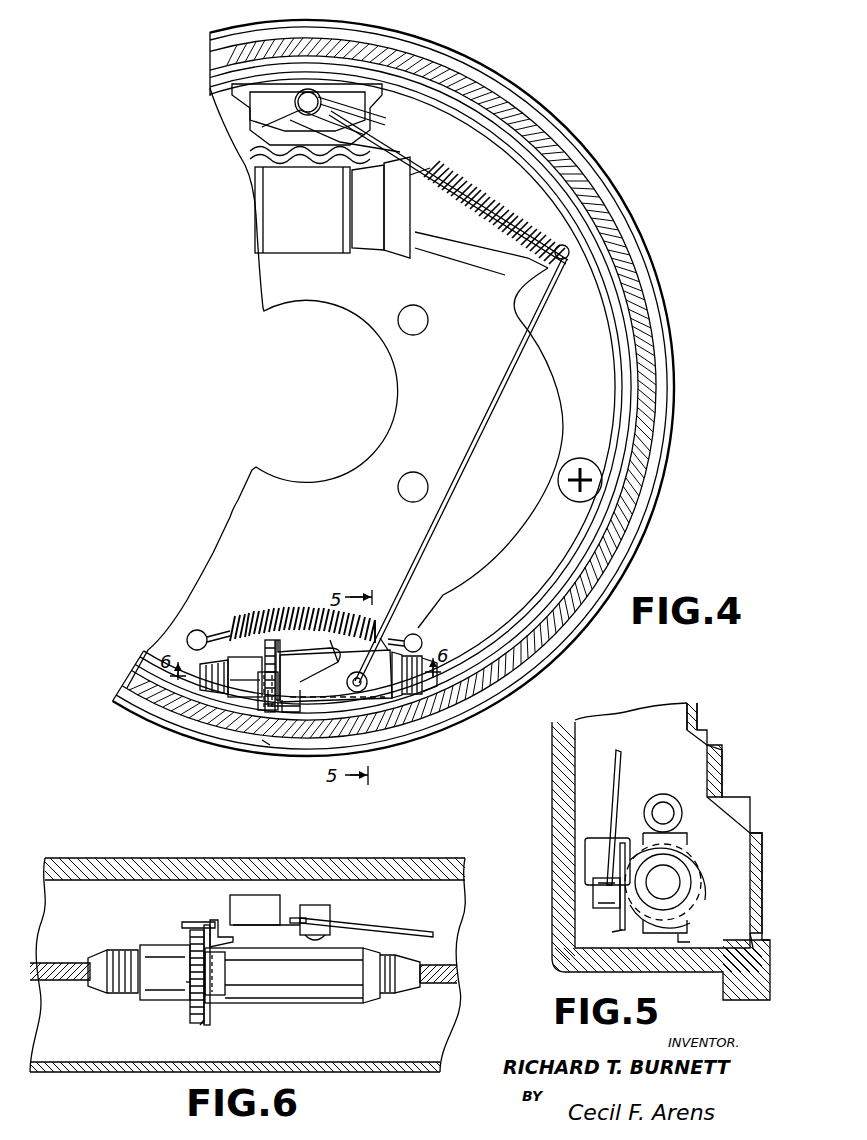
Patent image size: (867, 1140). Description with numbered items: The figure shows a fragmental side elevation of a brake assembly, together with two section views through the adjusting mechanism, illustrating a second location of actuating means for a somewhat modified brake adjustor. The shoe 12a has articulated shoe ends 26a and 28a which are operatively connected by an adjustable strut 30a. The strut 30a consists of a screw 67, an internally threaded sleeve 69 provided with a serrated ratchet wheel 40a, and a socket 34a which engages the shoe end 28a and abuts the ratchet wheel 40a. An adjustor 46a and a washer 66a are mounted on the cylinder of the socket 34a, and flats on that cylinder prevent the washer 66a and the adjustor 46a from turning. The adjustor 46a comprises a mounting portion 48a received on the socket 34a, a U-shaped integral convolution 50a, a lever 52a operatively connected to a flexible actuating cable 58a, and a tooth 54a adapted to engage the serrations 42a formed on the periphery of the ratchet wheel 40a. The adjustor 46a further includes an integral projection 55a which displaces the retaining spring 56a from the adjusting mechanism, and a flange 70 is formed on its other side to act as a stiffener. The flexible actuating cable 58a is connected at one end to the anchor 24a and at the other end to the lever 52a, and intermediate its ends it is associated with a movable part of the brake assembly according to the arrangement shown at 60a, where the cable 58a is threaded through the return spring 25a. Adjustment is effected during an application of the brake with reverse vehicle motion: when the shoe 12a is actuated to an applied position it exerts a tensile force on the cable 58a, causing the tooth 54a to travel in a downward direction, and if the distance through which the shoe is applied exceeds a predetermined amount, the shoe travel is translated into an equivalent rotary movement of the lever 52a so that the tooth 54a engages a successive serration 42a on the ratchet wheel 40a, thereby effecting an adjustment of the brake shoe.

In FIG. 4, the shoe 12a is at (432, 118).
In FIG. 4, the anchor 24a is at (310, 100).
In FIG. 4, the shoe return spring 25a is at (503, 200).
In FIG. 4, the articulated shoe end 26a is at (205, 625).
In FIG. 6, the articulated shoe end 26a is at (57, 967).
In FIG. 4, the articulated shoe end 28a is at (418, 632).
In FIG. 6, the articulated shoe end 28a is at (440, 958).
In FIG. 4, the adjustable strut 30a is at (228, 706).
In FIG. 6, the adjustable strut 30a is at (292, 1005).
In FIG. 4, the socket 34a is at (410, 722).
In FIG. 5, the socket 34a is at (672, 880).
In FIG. 6, the socket 34a is at (355, 997).
In FIG. 4, the serrated ratchet wheel 40a is at (267, 640).
In FIG. 5, the serrated ratchet wheel 40a is at (700, 888).
In FIG. 6, the serrated ratchet wheel 40a is at (198, 1017).
In FIG. 5, the serrations 42a is at (625, 840).
In FIG. 6, the serrations 42a is at (190, 982).
In FIG. 4, the adjustor 46a is at (316, 742).
In FIG. 5, the adjustor 46a is at (585, 872).
In FIG. 6, the adjustor 46a is at (218, 920).
In FIG. 4, the mounting portion 48a is at (308, 640).
In FIG. 5, the mounting portion 48a is at (695, 900).
In FIG. 6, the mounting portion 48a is at (209, 1003).
In FIG. 4, the U-shaped integral convolution 50a is at (383, 638).
In FIG. 5, the U-shaped integral convolution 50a is at (595, 840).
In FIG. 6, the U-shaped integral convolution 50a is at (258, 898).
In FIG. 4, the lever 52a is at (380, 738).
In FIG. 5, the lever 52a is at (620, 932).
In FIG. 6, the lever 52a is at (300, 930).
In FIG. 4, the tooth 54a is at (237, 706).
In FIG. 6, the tooth 54a is at (183, 922).
In FIG. 4, the integral projection 55a is at (300, 605).
In FIG. 5, the integral projection 55a is at (683, 835).
In FIG. 4, the retaining spring 56a is at (330, 612).
In FIG. 5, the retaining spring 56a is at (663, 800).
In FIG. 4, the flexible actuating cable 58a is at (462, 470).
In FIG. 5, the flexible actuating cable 58a is at (626, 768).
In FIG. 6, the flexible actuating cable 58a is at (410, 927).
In FIG. 4, the arrangement 60a is at (574, 286).
In FIG. 4, the washer 66a is at (270, 745).
In FIG. 6, the washer 66a is at (200, 1025).
In FIG. 4, the screw 67 is at (170, 732).
In FIG. 6, the screw 67 is at (118, 957).
In FIG. 4, the internally threaded sleeve 69 is at (240, 658).
In FIG. 6, the internally threaded sleeve 69 is at (153, 955).
In FIG. 4, the flange 70 is at (284, 735).
In FIG. 5, the flange 70 is at (700, 937).
In FIG. 6, the flange 70 is at (217, 972).